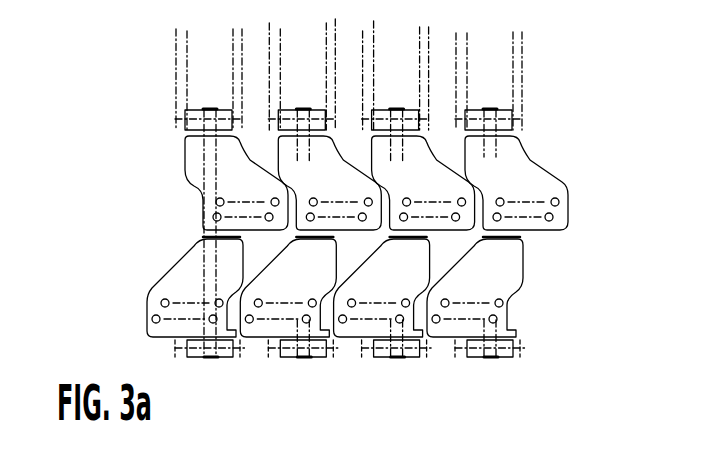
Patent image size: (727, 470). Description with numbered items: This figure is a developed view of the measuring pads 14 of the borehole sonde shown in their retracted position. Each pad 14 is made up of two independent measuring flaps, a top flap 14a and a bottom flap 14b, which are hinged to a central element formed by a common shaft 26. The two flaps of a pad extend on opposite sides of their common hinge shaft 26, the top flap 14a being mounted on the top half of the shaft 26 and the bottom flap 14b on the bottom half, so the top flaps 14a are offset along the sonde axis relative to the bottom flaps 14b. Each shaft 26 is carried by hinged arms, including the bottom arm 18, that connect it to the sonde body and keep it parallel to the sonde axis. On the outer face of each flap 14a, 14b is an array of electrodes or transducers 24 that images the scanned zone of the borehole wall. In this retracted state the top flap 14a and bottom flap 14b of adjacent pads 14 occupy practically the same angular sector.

The pad 14 is at (126, 231).
The top flap 14a is at (227, 180).
The bottom flap 14b is at (167, 282).
The bottom arm 18 is at (462, 64).
The electrodes or transducers 24 is at (496, 296).
The shaft 26 is at (492, 104).